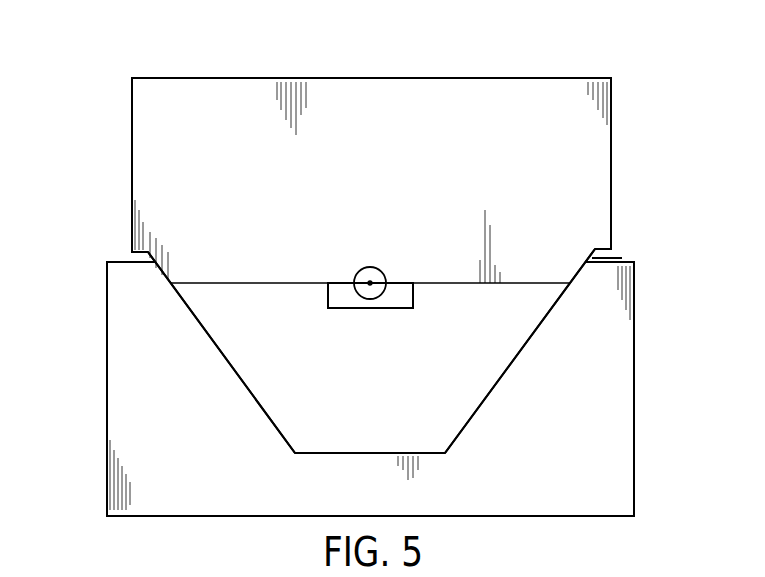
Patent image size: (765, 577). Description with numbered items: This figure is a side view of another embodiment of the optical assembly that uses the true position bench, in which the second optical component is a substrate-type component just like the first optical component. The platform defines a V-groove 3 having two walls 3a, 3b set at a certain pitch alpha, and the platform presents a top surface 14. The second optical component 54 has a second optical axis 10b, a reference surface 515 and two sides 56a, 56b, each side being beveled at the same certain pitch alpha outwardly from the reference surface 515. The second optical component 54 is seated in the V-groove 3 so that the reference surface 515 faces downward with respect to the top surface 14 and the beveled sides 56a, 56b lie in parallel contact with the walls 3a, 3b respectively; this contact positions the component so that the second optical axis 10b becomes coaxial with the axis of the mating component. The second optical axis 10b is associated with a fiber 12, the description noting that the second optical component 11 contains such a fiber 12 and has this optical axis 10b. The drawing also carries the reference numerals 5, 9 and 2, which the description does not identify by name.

The upper mold part 5 is at (172, 92).
The second optical component 54 is at (118, 145).
The side 56a is at (145, 258).
The side 56b is at (605, 258).
The top surface 14 is at (620, 257).
The reference surface 515 is at (285, 284).
The recess 9 is at (350, 310).
The fiber 12 is at (358, 271).
The second optical axis 10b is at (370, 283).
The V-groove 3 is at (228, 322).
The wall 3a is at (258, 400).
The wall 3b is at (496, 380).
The second optical component 11 is at (176, 510).
The base 2 is at (583, 519).